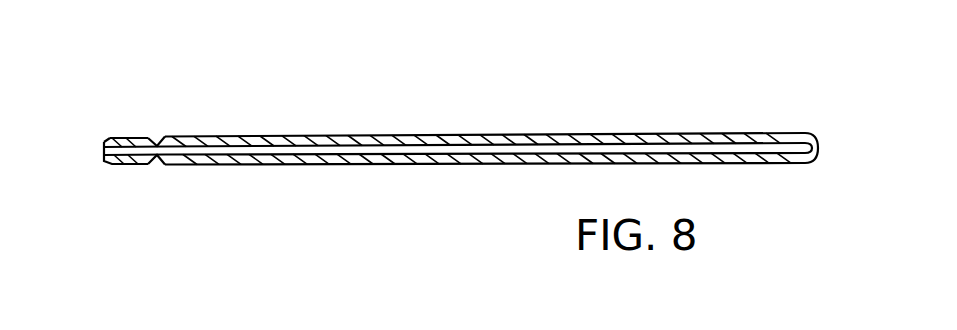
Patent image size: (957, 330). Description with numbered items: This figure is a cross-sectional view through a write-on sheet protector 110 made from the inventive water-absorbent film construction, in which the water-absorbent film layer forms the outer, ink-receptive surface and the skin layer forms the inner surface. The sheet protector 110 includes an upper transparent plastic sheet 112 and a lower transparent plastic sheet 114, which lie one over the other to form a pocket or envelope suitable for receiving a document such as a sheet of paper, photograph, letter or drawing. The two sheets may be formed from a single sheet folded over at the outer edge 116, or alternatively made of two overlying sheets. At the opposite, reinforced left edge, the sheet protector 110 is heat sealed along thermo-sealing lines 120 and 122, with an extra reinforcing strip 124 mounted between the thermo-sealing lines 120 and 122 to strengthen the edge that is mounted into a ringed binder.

The write-on sheet protector 110 is at (682, 88).
The upper transparent plastic sheet 112 is at (552, 134).
The lower transparent plastic sheet 114 is at (443, 165).
The outer edge 116 is at (819, 146).
The thermo-sealing line 120 is at (108, 138).
The thermo-sealing line 122 is at (157, 138).
The reinforcing strip 124 is at (132, 138).